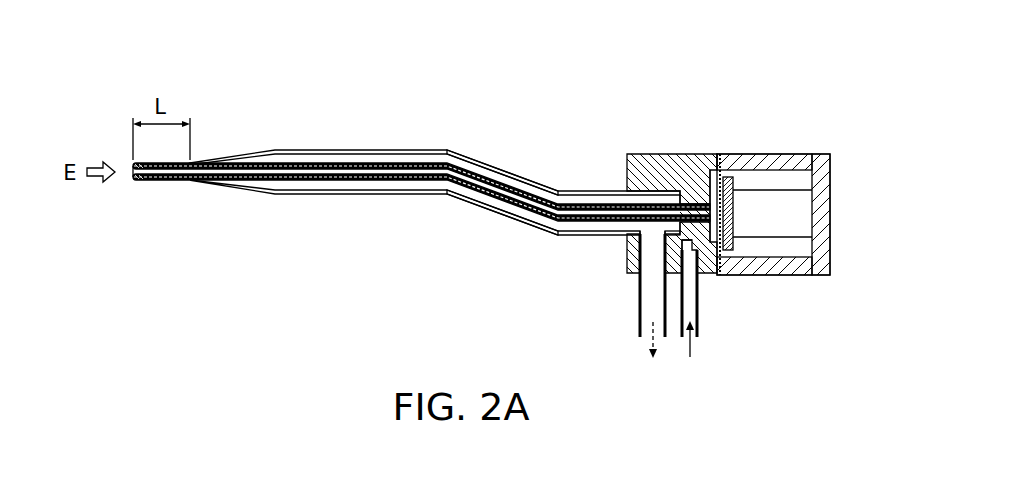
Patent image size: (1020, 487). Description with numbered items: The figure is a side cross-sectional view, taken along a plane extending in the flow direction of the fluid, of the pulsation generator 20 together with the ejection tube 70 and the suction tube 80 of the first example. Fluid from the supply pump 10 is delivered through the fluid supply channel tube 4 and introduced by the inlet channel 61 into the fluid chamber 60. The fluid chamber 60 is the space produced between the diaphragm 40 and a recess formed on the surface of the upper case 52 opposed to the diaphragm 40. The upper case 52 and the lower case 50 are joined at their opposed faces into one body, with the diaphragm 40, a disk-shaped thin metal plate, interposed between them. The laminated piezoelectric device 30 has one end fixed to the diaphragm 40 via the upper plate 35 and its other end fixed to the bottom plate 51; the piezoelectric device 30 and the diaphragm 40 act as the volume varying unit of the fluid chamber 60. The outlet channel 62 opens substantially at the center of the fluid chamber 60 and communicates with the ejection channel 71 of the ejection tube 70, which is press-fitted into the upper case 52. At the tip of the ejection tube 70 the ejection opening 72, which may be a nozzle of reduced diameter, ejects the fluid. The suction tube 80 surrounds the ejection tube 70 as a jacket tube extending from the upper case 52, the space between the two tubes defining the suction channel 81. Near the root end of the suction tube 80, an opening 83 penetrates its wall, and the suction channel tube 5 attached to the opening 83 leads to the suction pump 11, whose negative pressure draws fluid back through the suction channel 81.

The pulsation generator 20 is at (784, 76).
The piezoelectric device 30 is at (793, 195).
The upper plate 35 is at (735, 218).
The diaphragm 40 is at (718, 160).
The lower case 50 is at (740, 160).
The bottom plate 51 is at (831, 178).
The upper case 52 is at (627, 168).
The fluid chamber 60 is at (708, 207).
The inlet channel 61 is at (695, 265).
The outlet channel 62 is at (686, 180).
The ejection tube 70 is at (363, 166).
The ejection channel 71 is at (413, 176).
The ejection opening 72 is at (133, 172).
The suction tube 80 is at (497, 166).
The suction channel 81 is at (310, 157).
The opening 83 is at (650, 236).
The fluid supply channel tube 4 is at (700, 318).
The suction channel tube 5 is at (636, 318).
The supply pump 10 is at (692, 355).
The suction pump 11 is at (649, 356).